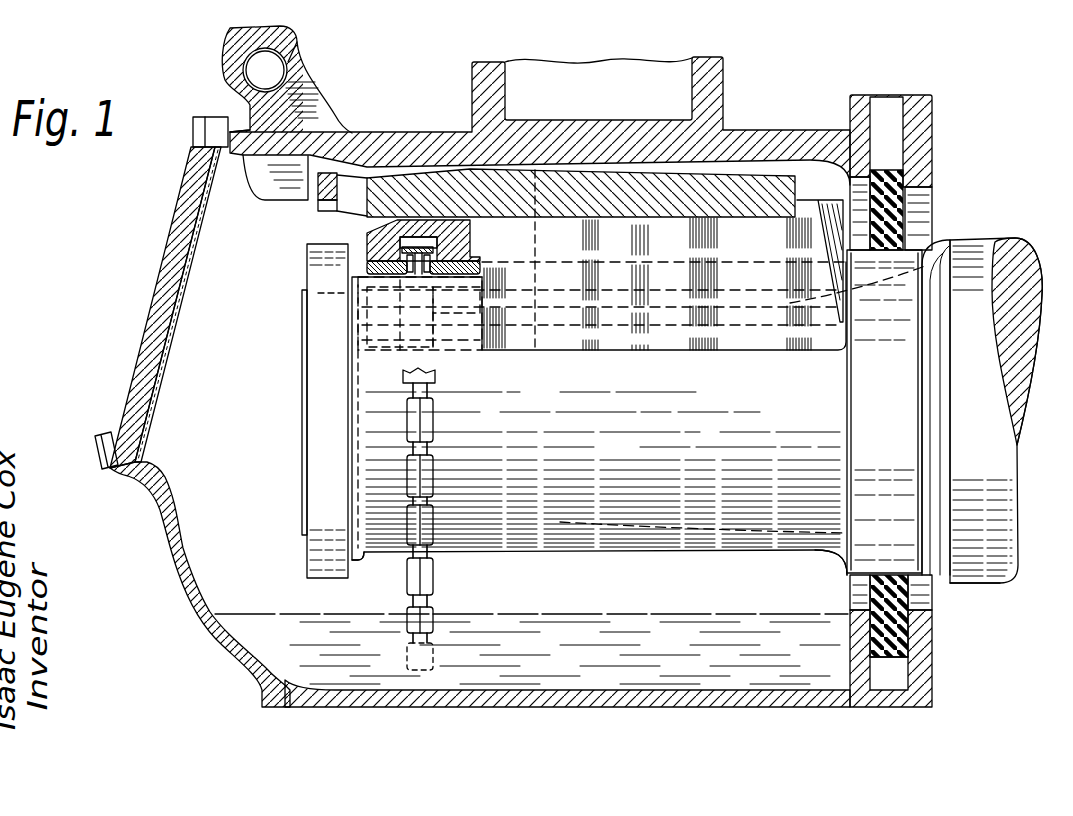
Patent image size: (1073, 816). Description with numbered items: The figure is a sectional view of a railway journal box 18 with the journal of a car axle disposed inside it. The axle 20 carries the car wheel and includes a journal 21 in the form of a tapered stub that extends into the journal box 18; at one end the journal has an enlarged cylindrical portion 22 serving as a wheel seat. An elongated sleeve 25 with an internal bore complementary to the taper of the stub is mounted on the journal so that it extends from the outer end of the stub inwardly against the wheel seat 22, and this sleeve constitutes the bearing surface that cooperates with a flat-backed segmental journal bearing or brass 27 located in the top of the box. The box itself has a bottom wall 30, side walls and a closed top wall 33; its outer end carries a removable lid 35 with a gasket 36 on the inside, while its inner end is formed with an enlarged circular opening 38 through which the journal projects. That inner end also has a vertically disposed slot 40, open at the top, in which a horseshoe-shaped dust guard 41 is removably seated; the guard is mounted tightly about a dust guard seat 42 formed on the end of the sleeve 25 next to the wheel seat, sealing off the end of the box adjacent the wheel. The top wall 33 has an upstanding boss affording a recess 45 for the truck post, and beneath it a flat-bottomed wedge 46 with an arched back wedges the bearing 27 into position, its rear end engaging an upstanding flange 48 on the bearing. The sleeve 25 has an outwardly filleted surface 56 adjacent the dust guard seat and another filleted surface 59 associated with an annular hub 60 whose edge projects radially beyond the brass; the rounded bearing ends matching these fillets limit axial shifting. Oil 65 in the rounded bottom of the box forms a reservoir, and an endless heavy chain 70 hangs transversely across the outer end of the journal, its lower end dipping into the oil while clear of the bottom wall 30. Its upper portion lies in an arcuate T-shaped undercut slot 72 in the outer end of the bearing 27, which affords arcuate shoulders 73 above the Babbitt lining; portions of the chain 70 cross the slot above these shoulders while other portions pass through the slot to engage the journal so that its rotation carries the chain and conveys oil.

The housing 18 is at (377, 132).
The axle 20 is at (1016, 371).
The journal 21 is at (623, 528).
The enlarged cylindrical portion 22 is at (975, 585).
The sleeve 25 is at (716, 404).
The journal bearing 27 is at (520, 352).
The bottom wall 30 is at (440, 700).
The top wall 33 is at (410, 147).
The lid 35 is at (142, 340).
The gasket 36 is at (143, 410).
The circular opening 38 is at (935, 190).
The slot 40 is at (900, 112).
The dust guard 41 is at (887, 167).
The dust guard seat 42 is at (871, 416).
The recess 45 is at (690, 70).
The wedge 46 is at (743, 185).
The flange 48 is at (807, 202).
The filleted surface 56 is at (837, 555).
The filleted surface 59 is at (357, 557).
The hub 60 is at (320, 578).
The oil 65 is at (243, 612).
The chain 70 is at (431, 573).
The undercut slot 72 is at (400, 241).
The shoulders 73 is at (440, 267).